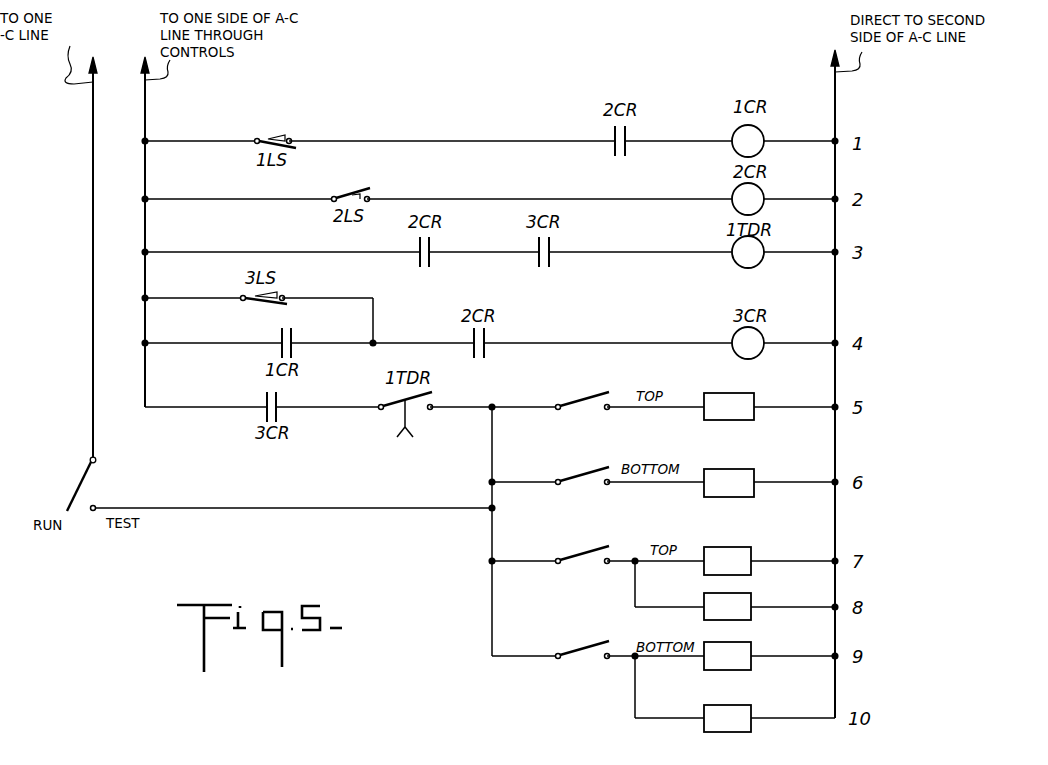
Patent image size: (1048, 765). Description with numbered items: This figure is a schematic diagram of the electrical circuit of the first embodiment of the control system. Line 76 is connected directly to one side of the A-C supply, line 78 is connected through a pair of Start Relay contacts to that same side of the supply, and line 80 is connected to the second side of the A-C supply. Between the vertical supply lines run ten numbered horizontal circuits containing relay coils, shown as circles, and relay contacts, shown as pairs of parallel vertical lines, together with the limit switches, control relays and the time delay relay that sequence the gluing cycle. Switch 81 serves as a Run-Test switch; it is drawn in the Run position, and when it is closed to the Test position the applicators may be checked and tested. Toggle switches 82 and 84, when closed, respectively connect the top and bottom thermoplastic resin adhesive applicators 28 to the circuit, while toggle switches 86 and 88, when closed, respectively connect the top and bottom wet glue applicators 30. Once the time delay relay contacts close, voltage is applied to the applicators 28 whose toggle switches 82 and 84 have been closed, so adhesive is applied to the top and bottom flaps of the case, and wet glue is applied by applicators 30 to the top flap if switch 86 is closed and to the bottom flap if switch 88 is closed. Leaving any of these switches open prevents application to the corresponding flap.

The line 76 is at (93, 190).
The line 78 is at (145, 127).
The line 80 is at (835, 125).
The Run-Test switch 81 is at (74, 485).
The toggle switch 82 is at (581, 402).
The toggle switch 84 is at (581, 477).
The toggle switch 86 is at (581, 556).
The toggle switch 88 is at (582, 662).
The thermoplastic resin adhesive applicators 28 is at (746, 408).
The wet glue applicators 30 is at (740, 564).